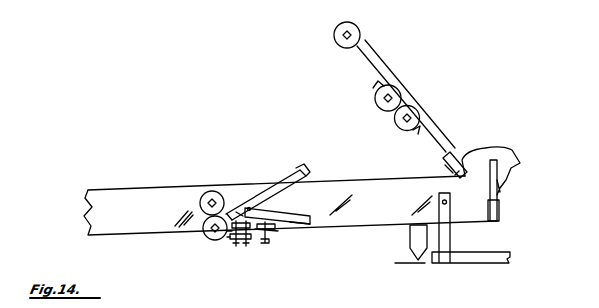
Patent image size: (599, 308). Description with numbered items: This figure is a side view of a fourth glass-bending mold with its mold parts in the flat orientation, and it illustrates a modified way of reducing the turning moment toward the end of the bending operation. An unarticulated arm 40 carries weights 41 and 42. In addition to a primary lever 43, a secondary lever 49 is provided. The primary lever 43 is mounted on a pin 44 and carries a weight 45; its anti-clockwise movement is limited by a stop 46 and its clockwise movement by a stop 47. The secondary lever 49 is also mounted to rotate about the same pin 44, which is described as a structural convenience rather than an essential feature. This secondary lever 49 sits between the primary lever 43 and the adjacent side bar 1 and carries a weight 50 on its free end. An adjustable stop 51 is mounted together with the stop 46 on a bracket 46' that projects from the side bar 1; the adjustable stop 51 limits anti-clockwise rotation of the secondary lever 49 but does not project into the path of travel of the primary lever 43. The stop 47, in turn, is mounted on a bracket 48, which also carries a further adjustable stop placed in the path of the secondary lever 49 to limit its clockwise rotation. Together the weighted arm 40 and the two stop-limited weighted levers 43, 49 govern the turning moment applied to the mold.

The side bar 1 is at (114, 193).
The unarticulated arm 40 is at (376, 66).
The weight 41 is at (341, 44).
The weights 42 is at (401, 126).
The primary lever 43 is at (297, 168).
The pin 44 is at (252, 206).
The weight 45 is at (210, 238).
The stop 46 is at (240, 263).
The bracket 46' is at (215, 264).
The stop 47 is at (279, 235).
The bracket 48 is at (270, 247).
The secondary lever 49 is at (300, 228).
The weight 50 is at (205, 193).
The adjustable stop 51 is at (243, 208).